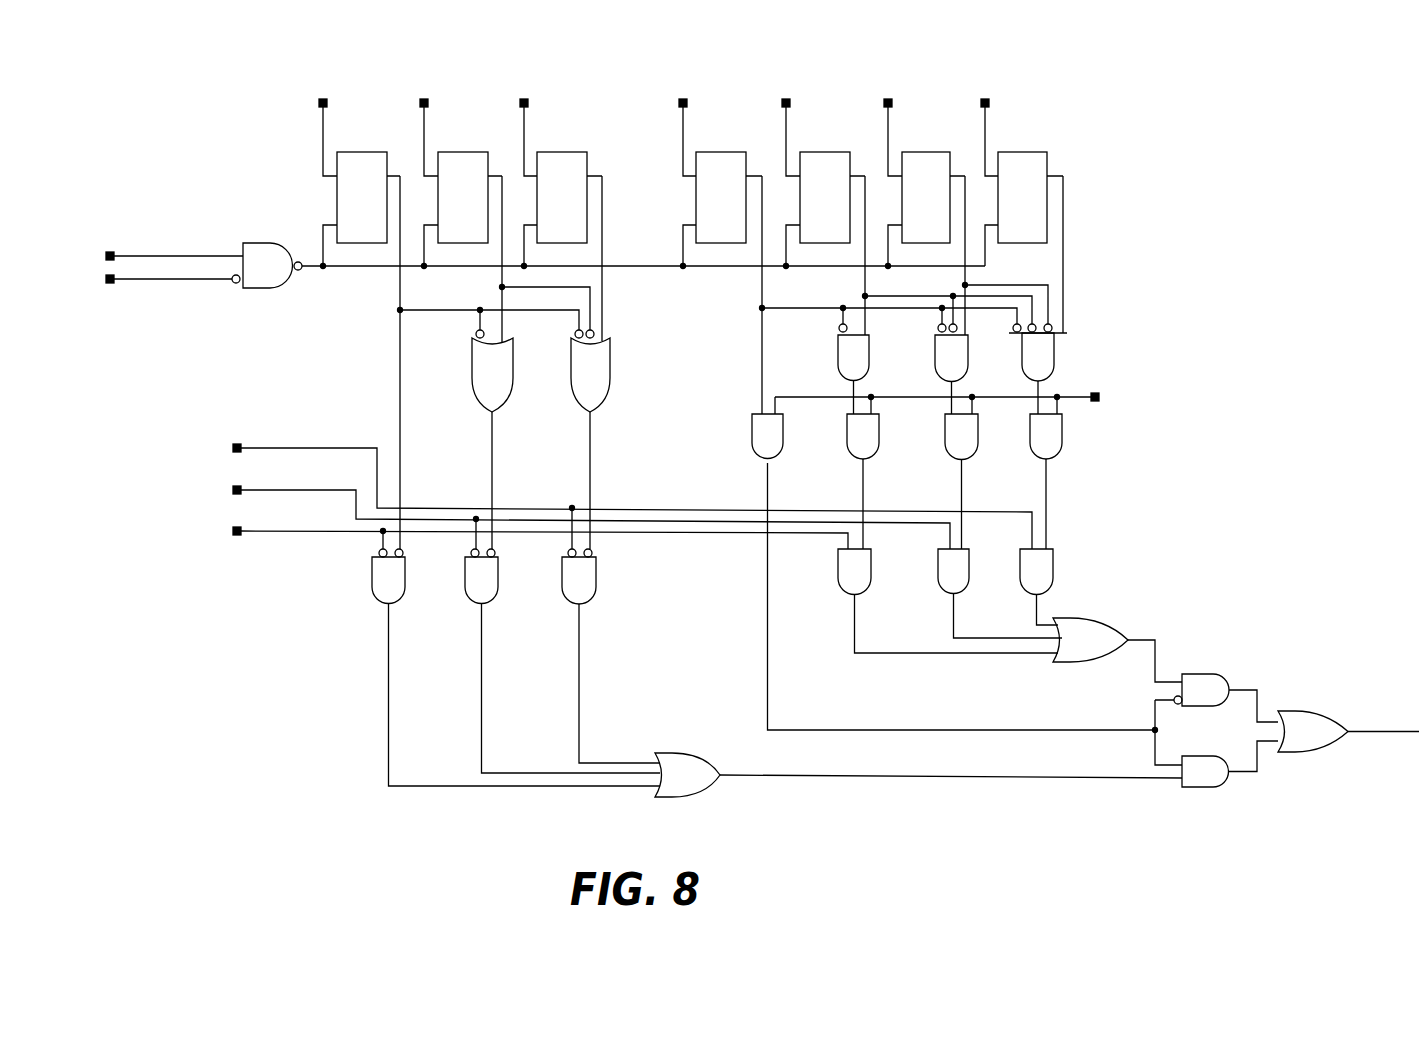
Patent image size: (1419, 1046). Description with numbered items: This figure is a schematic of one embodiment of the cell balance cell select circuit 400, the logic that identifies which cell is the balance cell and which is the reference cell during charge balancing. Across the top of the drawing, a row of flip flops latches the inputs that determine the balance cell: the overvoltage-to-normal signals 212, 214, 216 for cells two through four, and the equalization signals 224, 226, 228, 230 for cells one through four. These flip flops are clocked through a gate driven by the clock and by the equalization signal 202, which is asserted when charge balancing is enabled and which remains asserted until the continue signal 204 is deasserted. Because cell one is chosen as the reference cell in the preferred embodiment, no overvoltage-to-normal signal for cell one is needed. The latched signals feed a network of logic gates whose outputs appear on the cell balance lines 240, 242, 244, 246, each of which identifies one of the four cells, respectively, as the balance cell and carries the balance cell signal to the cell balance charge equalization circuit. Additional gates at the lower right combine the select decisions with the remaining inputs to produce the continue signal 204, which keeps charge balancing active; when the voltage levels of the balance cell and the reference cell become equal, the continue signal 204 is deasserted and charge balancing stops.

The EQ signal 202 is at (208, 281).
The CONT signal 204 is at (1408, 736).
The overvoltage-to-normal signal 212 is at (325, 97).
The overvoltage-to-normal signal 214 is at (426, 97).
The overvoltage-to-normal signal 216 is at (526, 97).
The equalization signal 224 is at (685, 97).
The equalization signal 226 is at (788, 97).
The equalization signal 228 is at (890, 97).
The equalization signal 230 is at (987, 97).
The cell balance line 240 is at (752, 420).
The cell balance line 242 is at (847, 420).
The cell balance line 244 is at (945, 420).
The cell balance line 246 is at (1030, 420).
The cell balance cell select circuit 400 is at (250, 707).